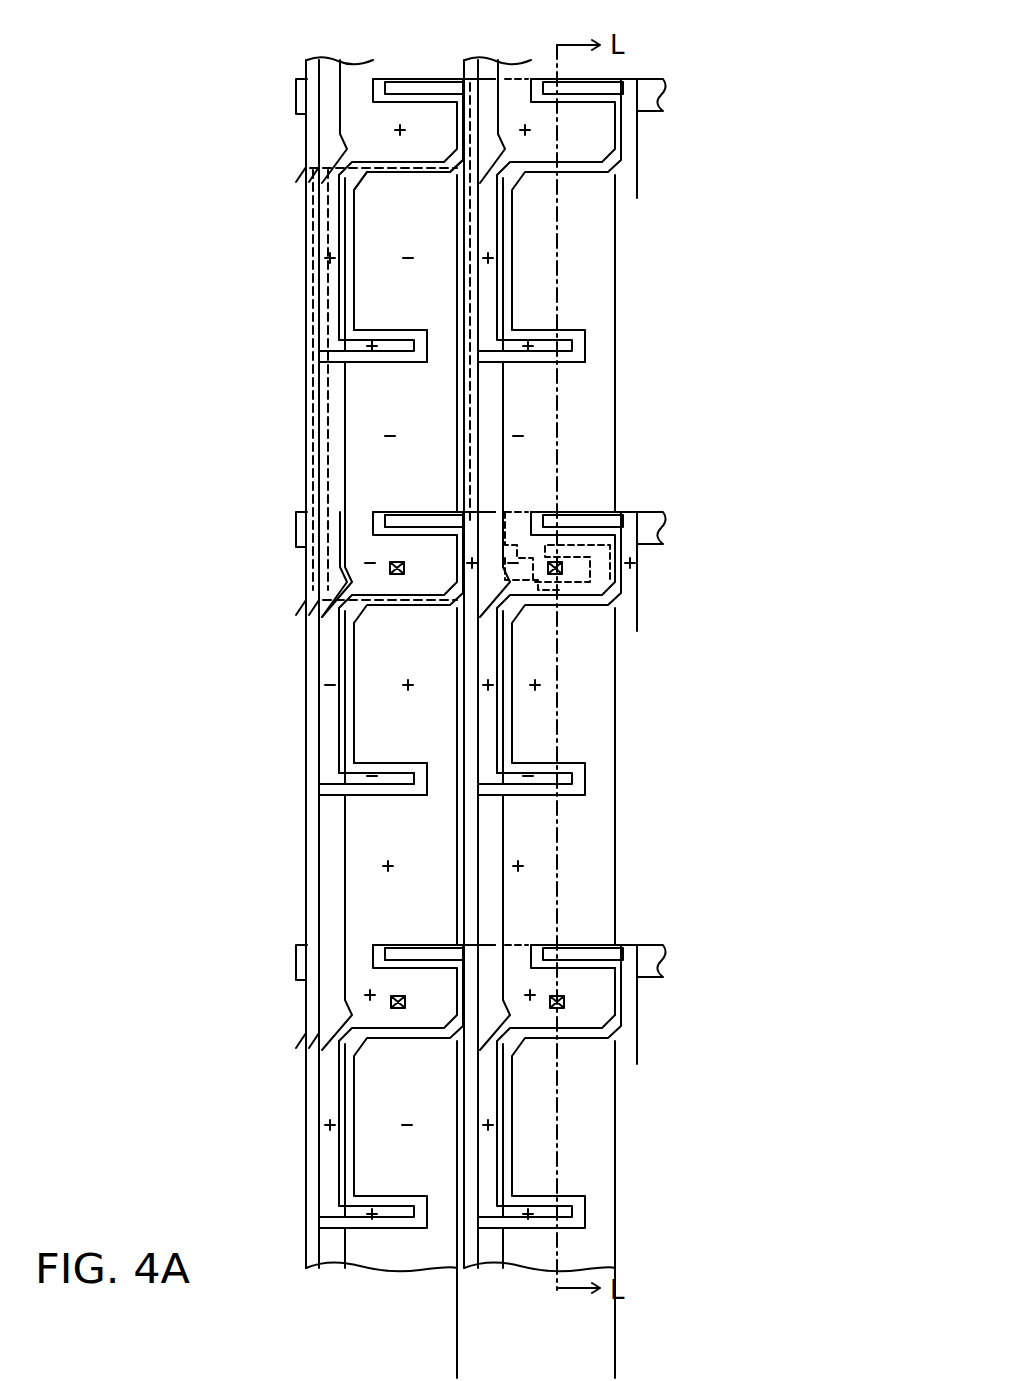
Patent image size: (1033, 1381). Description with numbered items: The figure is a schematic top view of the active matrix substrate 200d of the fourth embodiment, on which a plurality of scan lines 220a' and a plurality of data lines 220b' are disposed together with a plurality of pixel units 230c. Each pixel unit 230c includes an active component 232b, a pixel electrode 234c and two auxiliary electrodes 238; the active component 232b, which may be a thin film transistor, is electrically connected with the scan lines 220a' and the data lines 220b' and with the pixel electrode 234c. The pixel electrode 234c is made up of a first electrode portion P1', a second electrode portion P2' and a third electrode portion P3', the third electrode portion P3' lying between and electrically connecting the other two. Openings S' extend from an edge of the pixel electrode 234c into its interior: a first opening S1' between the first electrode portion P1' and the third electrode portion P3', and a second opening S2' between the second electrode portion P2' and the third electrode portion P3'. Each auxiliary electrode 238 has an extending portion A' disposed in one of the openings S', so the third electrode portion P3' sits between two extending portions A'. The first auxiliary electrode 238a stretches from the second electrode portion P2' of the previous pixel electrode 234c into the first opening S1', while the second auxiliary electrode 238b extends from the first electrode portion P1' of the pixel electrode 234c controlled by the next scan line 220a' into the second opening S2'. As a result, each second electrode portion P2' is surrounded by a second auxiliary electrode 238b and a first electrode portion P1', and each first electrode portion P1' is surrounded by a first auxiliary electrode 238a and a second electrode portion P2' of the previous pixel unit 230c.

The data line 220b' is at (410, 638).
The scan line 220a' is at (617, 571).
The second auxiliary electrode 238b is at (438, 90).
The first auxiliary electrode 238a is at (328, 722).
The auxiliary electrode 238 is at (158, 716).
The pixel unit 230c is at (305, 210).
The pixel electrode 234c is at (170, 316).
The active component 232b is at (568, 541).
The first electrode portion P1' is at (453, 474).
The second electrode portion P2' is at (454, 735).
The third electrode portion P3' is at (454, 681).
The first opening S1' is at (302, 349).
The second opening S2' is at (320, 469).
The opening S' is at (599, 335).
The extending portion A' is at (329, 866).
The active matrix substrate 200d is at (805, 1291).